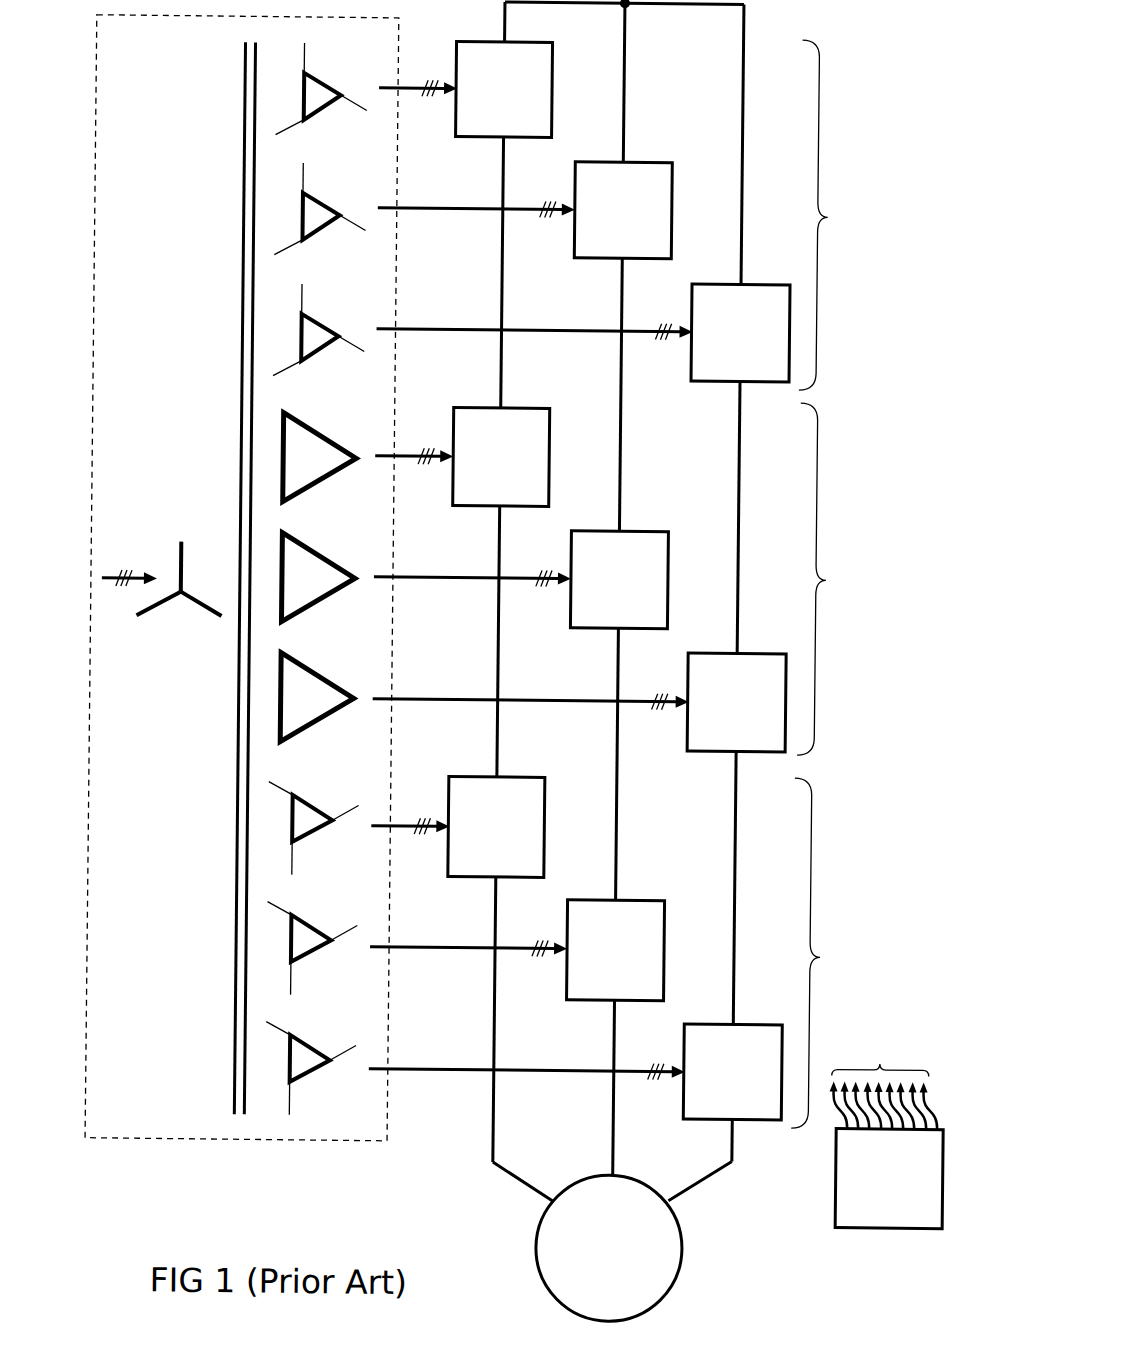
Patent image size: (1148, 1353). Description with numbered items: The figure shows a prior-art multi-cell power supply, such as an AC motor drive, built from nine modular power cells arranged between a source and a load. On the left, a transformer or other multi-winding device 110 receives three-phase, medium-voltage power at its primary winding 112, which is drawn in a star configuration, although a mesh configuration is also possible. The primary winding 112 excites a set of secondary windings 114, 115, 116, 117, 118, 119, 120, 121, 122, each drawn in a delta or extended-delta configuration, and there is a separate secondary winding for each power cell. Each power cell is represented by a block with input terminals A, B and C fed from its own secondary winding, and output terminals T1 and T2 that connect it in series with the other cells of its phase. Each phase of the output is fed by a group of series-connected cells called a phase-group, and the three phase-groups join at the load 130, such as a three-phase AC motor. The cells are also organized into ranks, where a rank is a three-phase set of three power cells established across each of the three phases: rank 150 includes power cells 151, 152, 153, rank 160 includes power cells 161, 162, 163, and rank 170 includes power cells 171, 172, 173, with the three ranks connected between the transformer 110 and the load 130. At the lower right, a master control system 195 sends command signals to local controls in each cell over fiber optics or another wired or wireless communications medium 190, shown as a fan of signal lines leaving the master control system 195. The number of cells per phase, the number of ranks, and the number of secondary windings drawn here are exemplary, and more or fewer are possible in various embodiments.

The transformer 110 is at (199, 1145).
The primary winding 112 is at (174, 541).
The secondary winding 114 is at (343, 85).
The secondary winding 115 is at (343, 205).
The secondary winding 116 is at (343, 326).
The secondary winding 117 is at (345, 443).
The secondary winding 118 is at (345, 563).
The secondary winding 119 is at (345, 685).
The secondary winding 120 is at (340, 814).
The secondary winding 121 is at (340, 934).
The secondary winding 122 is at (341, 1054).
The load 130 is at (695, 1240).
The rank 150 is at (840, 215).
The power cell 151 is at (554, 107).
The power cell 152 is at (675, 228).
The power cell 153 is at (726, 381).
The rank 160 is at (839, 579).
The power cell 161 is at (554, 470).
The power cell 162 is at (674, 592).
The power cell 163 is at (725, 751).
The rank 170 is at (836, 953).
The power cell 171 is at (553, 836).
The power cell 172 is at (674, 960).
The power cell 173 is at (722, 1119).
The communications medium 190 is at (883, 1083).
The master control system 195 is at (903, 1225).